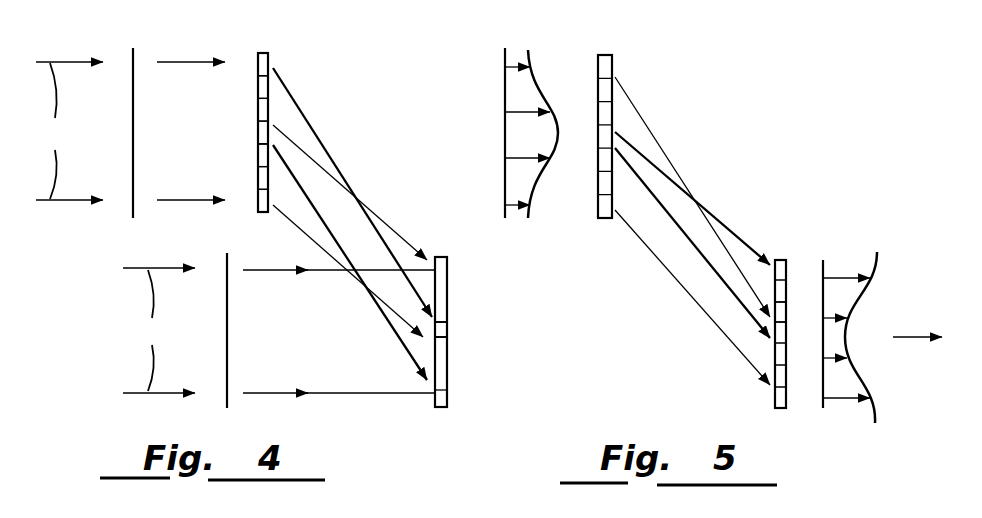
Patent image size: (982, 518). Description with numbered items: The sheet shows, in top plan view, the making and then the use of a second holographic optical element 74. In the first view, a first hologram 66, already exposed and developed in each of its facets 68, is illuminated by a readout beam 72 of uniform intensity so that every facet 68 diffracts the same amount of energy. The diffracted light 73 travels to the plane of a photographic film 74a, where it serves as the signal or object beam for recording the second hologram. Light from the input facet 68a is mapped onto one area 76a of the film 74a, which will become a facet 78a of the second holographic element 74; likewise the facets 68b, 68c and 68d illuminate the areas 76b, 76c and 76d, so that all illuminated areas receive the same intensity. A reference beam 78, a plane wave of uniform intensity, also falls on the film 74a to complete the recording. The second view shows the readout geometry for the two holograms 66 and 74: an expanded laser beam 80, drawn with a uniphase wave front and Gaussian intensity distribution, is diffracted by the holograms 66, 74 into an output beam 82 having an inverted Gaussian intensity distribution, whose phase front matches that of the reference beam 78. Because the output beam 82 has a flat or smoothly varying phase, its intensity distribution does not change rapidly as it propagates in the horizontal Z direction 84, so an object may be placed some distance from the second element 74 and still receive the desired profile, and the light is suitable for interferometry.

In FIG. 4, the first hologram 66 is at (277, 54).
In FIG. 5, the first hologram 66 is at (620, 67).
In FIG. 4, the facet 68 is at (258, 88).
In FIG. 4, the input facet 68a is at (258, 53).
In FIG. 4, the facet 68b is at (258, 125).
In FIG. 4, the facet 68c is at (258, 148).
In FIG. 4, the facet 68d is at (258, 205).
In FIG. 4, the readout beam 72 is at (69, 131).
In FIG. 4, the diffracted light 73 is at (310, 123).
In FIG. 5, the second holographic optical element 74 is at (787, 400).
In FIG. 4, the photographic film 74a is at (448, 403).
In FIG. 4, the area of the film 76a is at (447, 322).
In FIG. 4, the area of the film 76b is at (431, 261).
In FIG. 4, the area of the film 76c is at (434, 394).
In FIG. 4, the area of the film 76d is at (447, 340).
In FIG. 4, the reference beam 78 is at (159, 330).
In FIG. 5, the facet 78a is at (777, 322).
In FIG. 5, the expanded laser beam 80 is at (540, 82).
In FIG. 5, the output beam 82 is at (840, 400).
In FIG. 5, the Z direction 84 is at (905, 337).